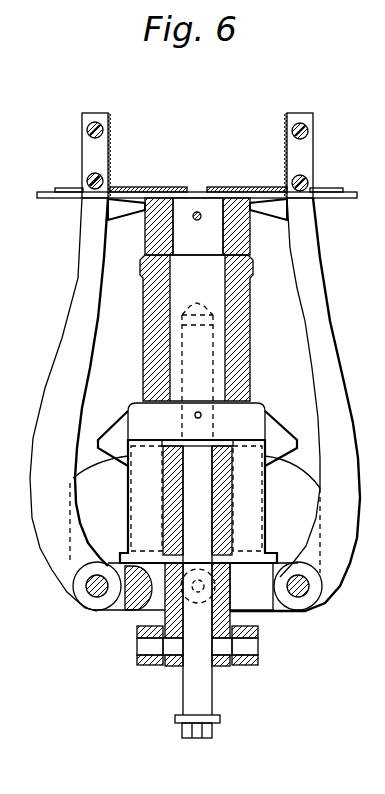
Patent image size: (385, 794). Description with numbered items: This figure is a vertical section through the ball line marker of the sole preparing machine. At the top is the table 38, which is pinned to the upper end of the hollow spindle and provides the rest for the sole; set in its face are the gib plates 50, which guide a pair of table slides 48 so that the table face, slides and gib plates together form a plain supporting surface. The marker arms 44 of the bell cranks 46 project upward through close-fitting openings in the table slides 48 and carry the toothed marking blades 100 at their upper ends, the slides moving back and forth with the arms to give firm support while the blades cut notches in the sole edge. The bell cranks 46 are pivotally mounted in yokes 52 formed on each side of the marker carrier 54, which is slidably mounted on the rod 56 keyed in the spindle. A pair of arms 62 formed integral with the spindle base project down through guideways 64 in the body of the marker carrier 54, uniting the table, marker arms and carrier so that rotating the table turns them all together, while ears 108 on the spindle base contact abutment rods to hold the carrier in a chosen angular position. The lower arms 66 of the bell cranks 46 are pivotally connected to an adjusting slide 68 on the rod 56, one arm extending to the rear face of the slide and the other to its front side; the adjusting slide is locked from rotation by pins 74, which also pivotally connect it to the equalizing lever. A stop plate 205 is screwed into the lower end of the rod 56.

The table 38 is at (155, 236).
The marker arms 44 is at (100, 140).
The bell cranks 46 is at (85, 315).
The table slides 48 is at (112, 192).
The gib plates 50 is at (217, 188).
The yokes 52 is at (107, 473).
The marker carrier 54 is at (178, 525).
The rod 56 is at (188, 692).
The arms 62 is at (145, 495).
The guideways 64 is at (164, 474).
The lower arms 66 is at (127, 613).
The adjusting slide 68 is at (168, 670).
The pins 74 is at (140, 653).
The marking blades 100 is at (110, 130).
The ears 108 is at (107, 437).
The stop plates 205 is at (223, 722).